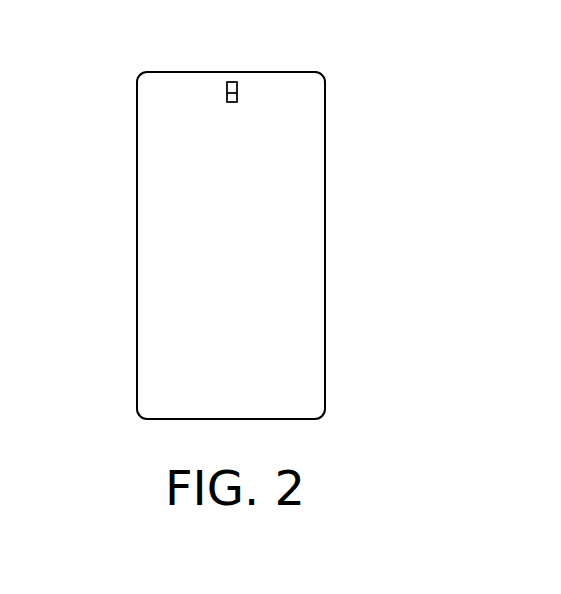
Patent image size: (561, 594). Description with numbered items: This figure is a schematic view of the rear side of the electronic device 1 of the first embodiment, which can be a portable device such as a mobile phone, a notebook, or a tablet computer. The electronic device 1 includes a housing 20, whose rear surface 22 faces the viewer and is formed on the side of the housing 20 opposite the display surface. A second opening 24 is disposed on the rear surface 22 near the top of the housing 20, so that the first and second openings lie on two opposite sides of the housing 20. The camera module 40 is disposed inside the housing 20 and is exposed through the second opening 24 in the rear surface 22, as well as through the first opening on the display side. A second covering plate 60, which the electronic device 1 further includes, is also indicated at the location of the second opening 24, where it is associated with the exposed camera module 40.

The electronic device 1 is at (408, 36).
The housing 20 is at (327, 128).
The rear surface 22 is at (315, 245).
The second opening 24 is at (227, 88).
The camera module 40 is at (229, 82).
The second covering plate 60 is at (227, 96).